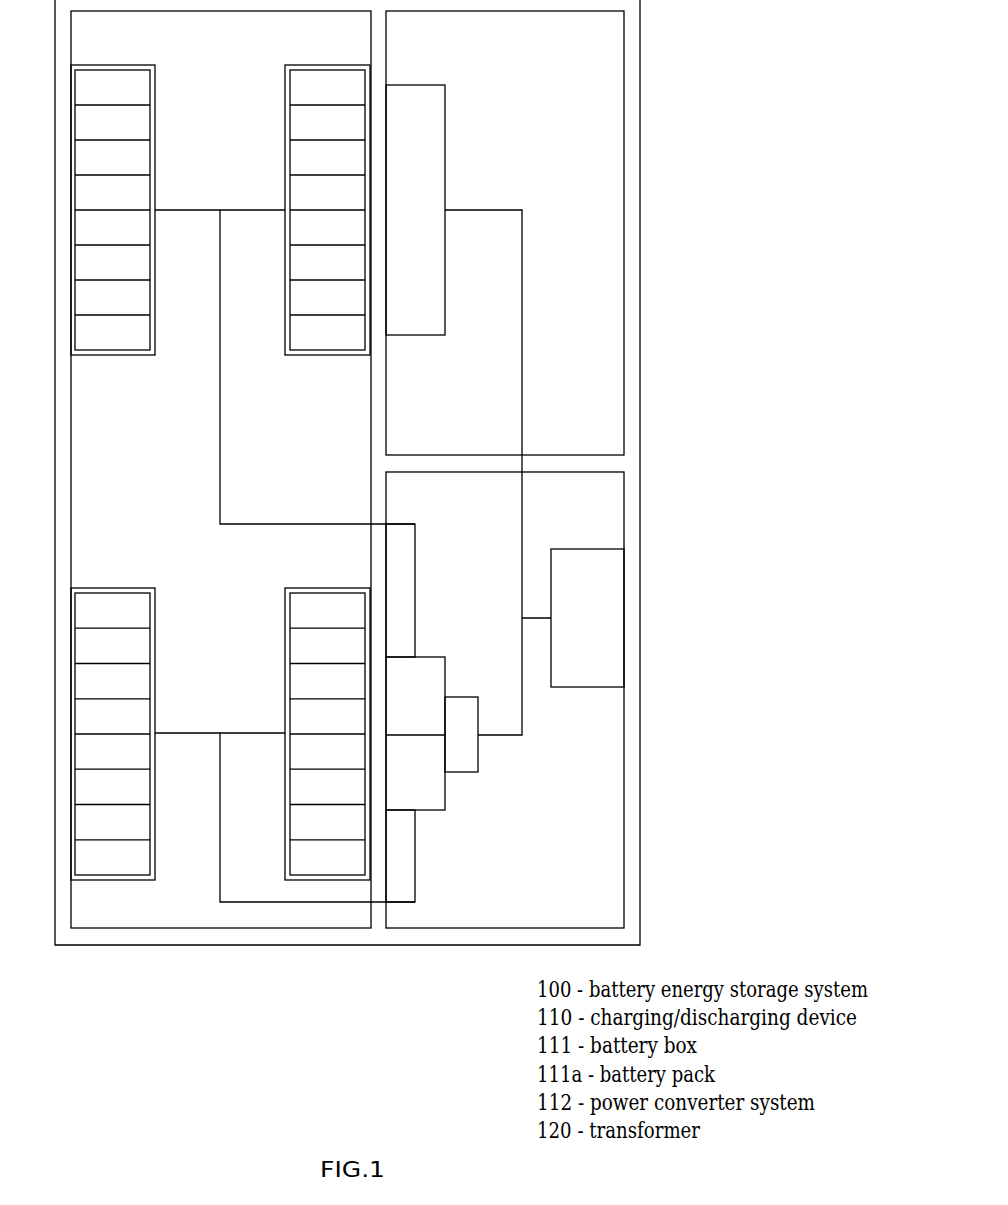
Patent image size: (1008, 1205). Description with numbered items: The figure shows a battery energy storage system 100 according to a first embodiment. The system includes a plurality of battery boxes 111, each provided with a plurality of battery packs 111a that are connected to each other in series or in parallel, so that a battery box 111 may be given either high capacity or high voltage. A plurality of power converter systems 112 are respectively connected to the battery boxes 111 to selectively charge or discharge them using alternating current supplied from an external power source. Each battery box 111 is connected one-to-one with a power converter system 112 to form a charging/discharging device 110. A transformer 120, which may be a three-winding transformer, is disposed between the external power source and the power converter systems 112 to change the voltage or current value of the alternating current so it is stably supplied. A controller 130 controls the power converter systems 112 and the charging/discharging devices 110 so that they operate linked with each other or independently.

The battery energy storage system 100 is at (664, 98).
The charging/discharging device 110 is at (464, 371).
The battery box 111 is at (327, 355).
The battery pack 111a is at (318, 795).
The power converter system 112 is at (433, 657).
The transformer 120 is at (624, 604).
The controller 130 is at (445, 140).